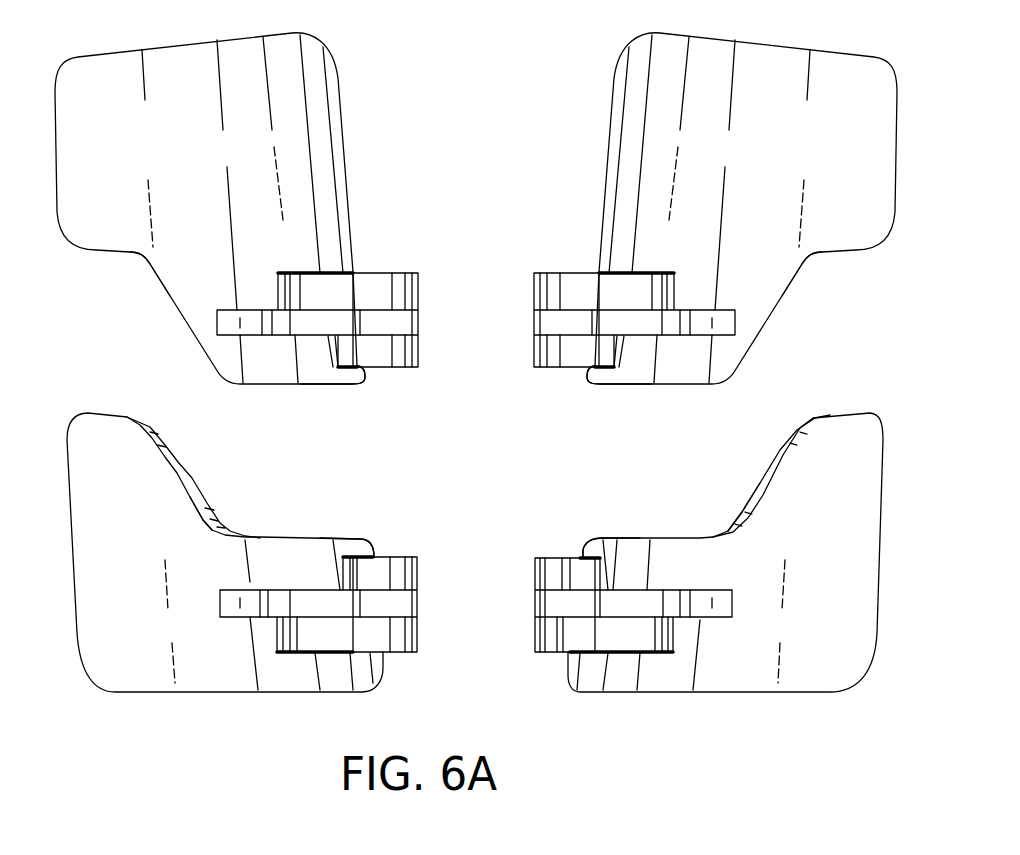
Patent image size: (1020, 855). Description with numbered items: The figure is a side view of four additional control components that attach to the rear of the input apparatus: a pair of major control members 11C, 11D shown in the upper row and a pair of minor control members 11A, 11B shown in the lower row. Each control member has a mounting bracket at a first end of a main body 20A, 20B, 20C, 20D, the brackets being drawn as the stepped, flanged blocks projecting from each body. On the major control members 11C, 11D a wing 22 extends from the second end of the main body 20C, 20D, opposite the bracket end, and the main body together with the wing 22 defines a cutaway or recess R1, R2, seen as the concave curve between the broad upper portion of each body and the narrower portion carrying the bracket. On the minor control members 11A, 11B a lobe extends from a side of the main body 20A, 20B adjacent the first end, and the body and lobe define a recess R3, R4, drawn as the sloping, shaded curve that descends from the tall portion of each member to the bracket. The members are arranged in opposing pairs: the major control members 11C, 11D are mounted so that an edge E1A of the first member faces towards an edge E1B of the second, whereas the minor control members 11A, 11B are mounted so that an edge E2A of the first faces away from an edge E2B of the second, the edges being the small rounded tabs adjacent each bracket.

The minor control member 11A is at (231, 525).
The minor control member 11B is at (686, 525).
The major control member 11C is at (222, 211).
The major control member 11D is at (689, 211).
The main body 20A is at (310, 580).
The main body 20B is at (718, 580).
The main body 20C is at (310, 254).
The main body 20D is at (690, 234).
The wing 22 is at (117, 204).
The recess R1 is at (784, 272).
The recess R2 is at (110, 289).
The recess R3 is at (250, 499).
The recess R4 is at (637, 511).
The edge E1A is at (290, 386).
The edge E1B is at (588, 386).
The edge E2A is at (288, 538).
The edge E2B is at (597, 538).